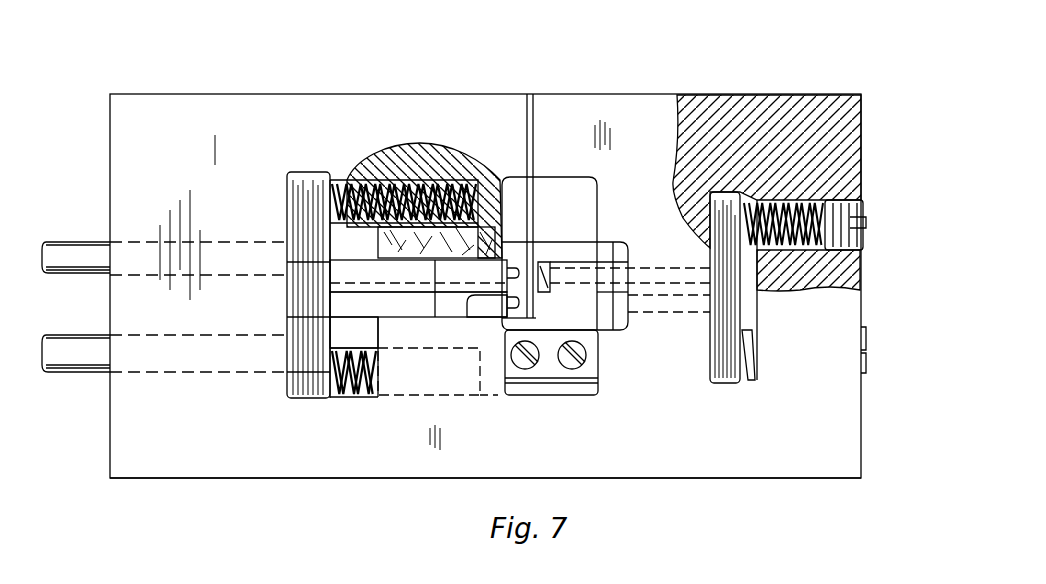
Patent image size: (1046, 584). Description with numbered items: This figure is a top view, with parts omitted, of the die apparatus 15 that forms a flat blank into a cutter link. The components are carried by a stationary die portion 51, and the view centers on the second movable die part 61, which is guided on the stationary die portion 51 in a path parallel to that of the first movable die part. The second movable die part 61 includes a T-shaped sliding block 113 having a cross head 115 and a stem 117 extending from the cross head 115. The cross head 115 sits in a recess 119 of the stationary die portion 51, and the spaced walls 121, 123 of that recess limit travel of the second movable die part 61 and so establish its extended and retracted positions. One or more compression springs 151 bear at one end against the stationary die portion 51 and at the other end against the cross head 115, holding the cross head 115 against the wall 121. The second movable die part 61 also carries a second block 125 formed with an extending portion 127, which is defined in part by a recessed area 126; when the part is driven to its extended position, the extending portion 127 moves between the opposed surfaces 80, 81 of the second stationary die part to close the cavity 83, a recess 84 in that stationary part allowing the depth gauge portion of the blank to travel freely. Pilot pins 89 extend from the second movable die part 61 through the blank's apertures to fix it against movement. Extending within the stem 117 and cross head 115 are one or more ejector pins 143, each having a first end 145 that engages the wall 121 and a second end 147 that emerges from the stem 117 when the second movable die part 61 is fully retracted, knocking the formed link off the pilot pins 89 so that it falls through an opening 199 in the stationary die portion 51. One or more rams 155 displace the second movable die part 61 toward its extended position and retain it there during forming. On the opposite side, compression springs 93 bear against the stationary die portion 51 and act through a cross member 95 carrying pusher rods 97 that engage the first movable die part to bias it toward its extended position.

The apparatus 15 is at (458, 68).
The stationary die portion 51 is at (340, 465).
The second movable die part 61 is at (357, 267).
The opposed surface 80 is at (545, 262).
The opposed surface 81 is at (547, 288).
The cavity 83 is at (560, 290).
The recess 84 is at (583, 353).
The pilot pins 89 is at (518, 285).
The compression springs 93 is at (805, 200).
The cross member 95 is at (728, 372).
The pusher rods 97 is at (655, 288).
The sliding block 113 is at (318, 310).
The cross head 115 is at (290, 310).
The stem 117 is at (330, 270).
The recess 119 is at (345, 400).
The wall 121 is at (290, 375).
The wall 123 is at (378, 243).
The second block 125 is at (453, 303).
The recessed area 126 is at (497, 308).
The extending portion 127 is at (436, 242).
The ejector pins 143 is at (386, 296).
The first end 145 is at (336, 280).
The second end 147 is at (548, 262).
The compression springs 151 is at (343, 182).
The rams 155 is at (66, 252).
The opening 199 is at (490, 380).